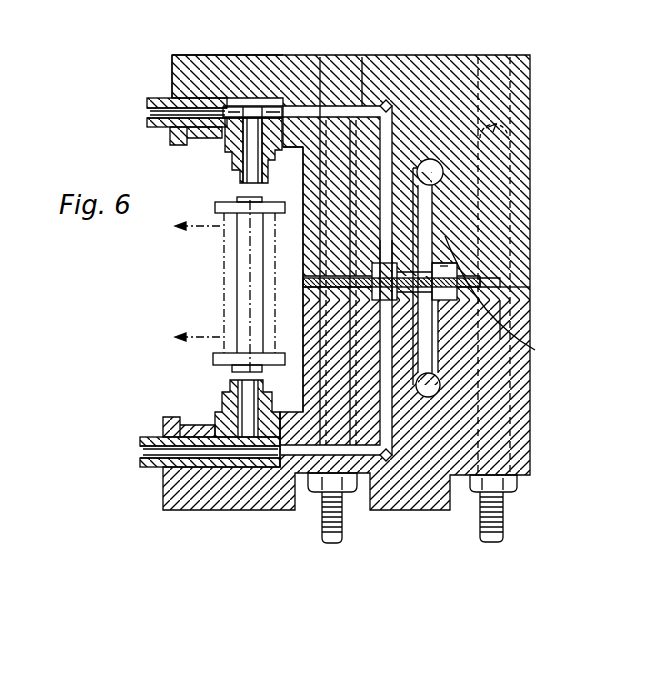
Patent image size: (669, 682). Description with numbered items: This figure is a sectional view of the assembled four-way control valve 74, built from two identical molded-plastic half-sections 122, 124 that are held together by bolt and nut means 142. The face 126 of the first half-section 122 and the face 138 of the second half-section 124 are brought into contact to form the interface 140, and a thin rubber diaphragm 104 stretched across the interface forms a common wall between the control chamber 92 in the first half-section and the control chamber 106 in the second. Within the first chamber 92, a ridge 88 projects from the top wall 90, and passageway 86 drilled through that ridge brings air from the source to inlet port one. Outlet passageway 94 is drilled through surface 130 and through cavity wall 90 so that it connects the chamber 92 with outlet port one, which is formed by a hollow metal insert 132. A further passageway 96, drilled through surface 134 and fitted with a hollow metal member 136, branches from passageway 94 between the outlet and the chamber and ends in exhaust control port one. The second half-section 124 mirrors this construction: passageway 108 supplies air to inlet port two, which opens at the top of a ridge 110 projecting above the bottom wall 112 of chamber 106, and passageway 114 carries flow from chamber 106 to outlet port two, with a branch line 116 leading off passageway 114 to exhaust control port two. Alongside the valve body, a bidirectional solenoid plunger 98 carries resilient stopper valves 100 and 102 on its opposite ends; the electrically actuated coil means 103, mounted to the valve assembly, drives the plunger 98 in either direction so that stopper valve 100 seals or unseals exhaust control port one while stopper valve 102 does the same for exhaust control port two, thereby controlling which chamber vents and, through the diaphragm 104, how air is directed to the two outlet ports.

The four-way control valve 74 is at (540, 122).
The passageway 86 is at (432, 199).
The ridge portion 88 is at (384, 252).
The top wall 90 is at (478, 262).
The control chamber 92 is at (530, 257).
The outlet passageway 94 is at (300, 110).
The passageway 96 is at (224, 147).
The bidirectional solenoid plunger 98 is at (247, 279).
The resilient stopper valve 100 is at (233, 232).
The resilient stopper valve 102 is at (217, 368).
The electrically actuated coil means 103 is at (226, 312).
The diaphragm 104 is at (520, 312).
The control chamber 106 is at (440, 302).
The passageway 108 is at (432, 373).
The ridge 110 is at (305, 314).
The bottom wall 112 is at (535, 350).
The passageway 114 is at (182, 467).
The branch line 116 is at (228, 404).
The valve half-section 122 is at (527, 160).
The valve half-section 124 is at (525, 332).
The face 126 is at (530, 271).
The surface 130 is at (172, 76).
The hollow metal insert 132 is at (147, 120).
The surface 134 is at (287, 279).
The hollow metal member 136 is at (223, 182).
The face 138 is at (500, 296).
The interface 140 is at (530, 281).
The bolt and nut means 142 is at (485, 528).